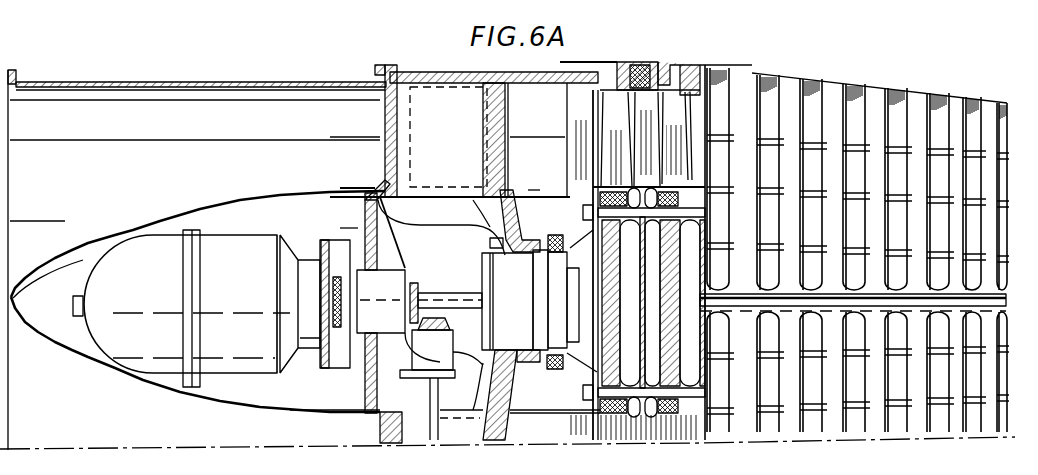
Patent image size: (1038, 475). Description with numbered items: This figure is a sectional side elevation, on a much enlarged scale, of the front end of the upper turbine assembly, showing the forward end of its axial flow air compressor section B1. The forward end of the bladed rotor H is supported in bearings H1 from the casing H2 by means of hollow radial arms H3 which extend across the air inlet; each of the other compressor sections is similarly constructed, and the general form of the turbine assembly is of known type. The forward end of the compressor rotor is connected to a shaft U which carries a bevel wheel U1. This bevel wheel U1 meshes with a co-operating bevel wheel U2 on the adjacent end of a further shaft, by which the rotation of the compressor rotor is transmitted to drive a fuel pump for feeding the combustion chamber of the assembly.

The bladed rotor H is at (613, 190).
The bearings H1 is at (502, 262).
The casing H2 is at (568, 80).
The hollow radial arms H3 is at (492, 102).
The shaft U is at (460, 298).
The bevel wheel U1 is at (412, 282).
The co-operating bevel wheel U2 is at (437, 318).
The air compressor section B1 is at (867, 120).